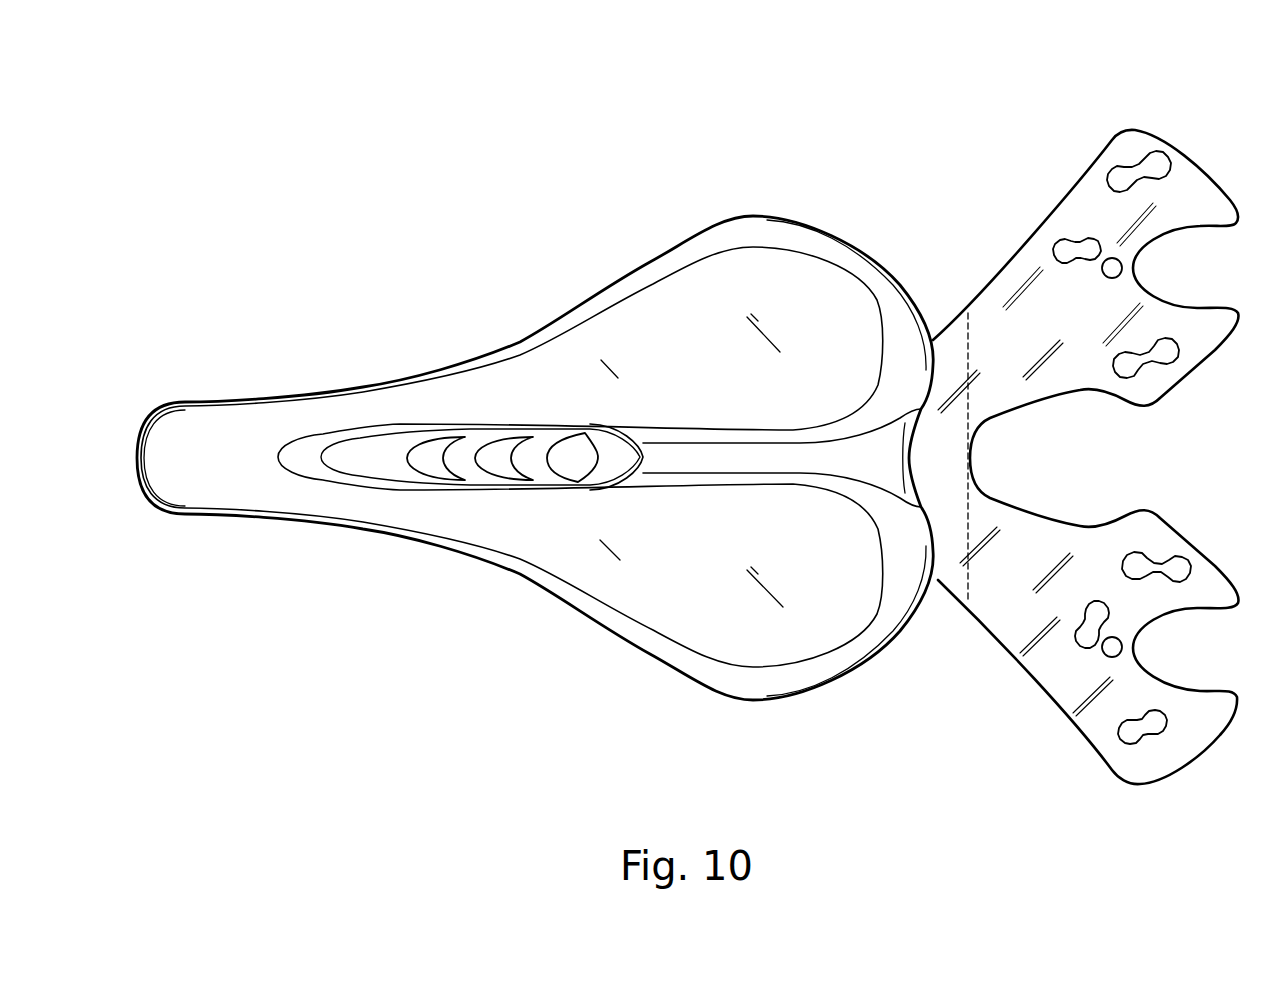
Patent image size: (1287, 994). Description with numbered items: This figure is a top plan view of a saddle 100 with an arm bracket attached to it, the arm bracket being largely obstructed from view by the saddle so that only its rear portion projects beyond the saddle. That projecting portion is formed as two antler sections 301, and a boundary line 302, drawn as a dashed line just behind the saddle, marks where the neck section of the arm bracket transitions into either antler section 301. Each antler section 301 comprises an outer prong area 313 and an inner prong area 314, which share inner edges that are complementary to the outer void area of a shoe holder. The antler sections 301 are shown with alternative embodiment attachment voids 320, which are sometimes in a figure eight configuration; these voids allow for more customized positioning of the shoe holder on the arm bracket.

The saddle 100 is at (712, 357).
The antler section 301 is at (1031, 346).
The boundary line 302 is at (968, 580).
The outer prong area 313 is at (1218, 721).
The inner prong area 314 is at (1231, 602).
The attachment voids 320 is at (1160, 160).